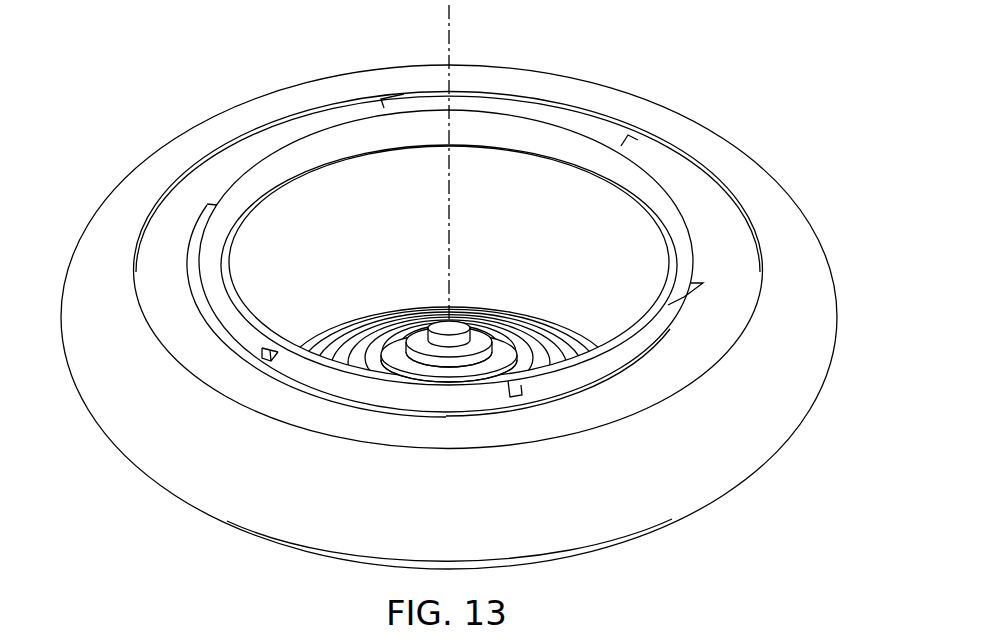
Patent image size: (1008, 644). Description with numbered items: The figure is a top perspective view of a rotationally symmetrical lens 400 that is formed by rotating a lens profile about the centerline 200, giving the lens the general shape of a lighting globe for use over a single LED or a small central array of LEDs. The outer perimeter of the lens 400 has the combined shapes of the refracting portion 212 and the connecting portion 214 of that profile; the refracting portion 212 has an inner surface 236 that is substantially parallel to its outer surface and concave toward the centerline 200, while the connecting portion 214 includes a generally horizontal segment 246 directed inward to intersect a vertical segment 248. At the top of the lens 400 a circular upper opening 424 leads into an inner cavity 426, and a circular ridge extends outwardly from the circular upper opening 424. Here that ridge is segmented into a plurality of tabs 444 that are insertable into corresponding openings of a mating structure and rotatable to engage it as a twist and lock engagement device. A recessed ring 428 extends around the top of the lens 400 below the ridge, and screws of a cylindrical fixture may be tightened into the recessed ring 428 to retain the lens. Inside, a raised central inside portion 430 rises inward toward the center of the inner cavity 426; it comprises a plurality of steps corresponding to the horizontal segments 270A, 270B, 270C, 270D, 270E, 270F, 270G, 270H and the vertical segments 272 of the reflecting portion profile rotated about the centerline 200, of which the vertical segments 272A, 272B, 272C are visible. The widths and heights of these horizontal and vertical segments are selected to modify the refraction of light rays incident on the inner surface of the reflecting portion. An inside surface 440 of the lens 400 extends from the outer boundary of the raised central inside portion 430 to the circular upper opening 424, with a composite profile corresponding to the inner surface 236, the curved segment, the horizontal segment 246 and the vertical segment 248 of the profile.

The rotationally symmetrical lens 400 is at (178, 108).
The centerline 200 is at (450, 50).
The connecting portion 214 is at (764, 185).
The refracting portion 212 is at (560, 553).
The horizontal segment 246 is at (693, 172).
The circular upper opening 424 is at (607, 172).
The tabs 444 is at (410, 100).
The inner cavity 426 is at (464, 217).
The inside surface 440 is at (668, 264).
The inner surface 236 is at (652, 307).
The recessed ring 428 is at (590, 388).
The vertical segment 248 is at (640, 203).
The first horizontal segment 270A is at (436, 325).
The horizontal segment 270B is at (479, 328).
The horizontal segment 270C is at (410, 333).
The horizontal segment 270D is at (523, 343).
The horizontal segment 270E is at (396, 342).
The horizontal segment 270F is at (544, 347).
The horizontal segment 270G is at (352, 340).
The horizontal segment 270H is at (580, 345).
The vertical segments 272 is at (307, 346).
The vertical segment 272A is at (455, 348).
The vertical segment 272B is at (412, 366).
The vertical segment 272C is at (528, 388).
The raised central inside portion 430 is at (464, 323).